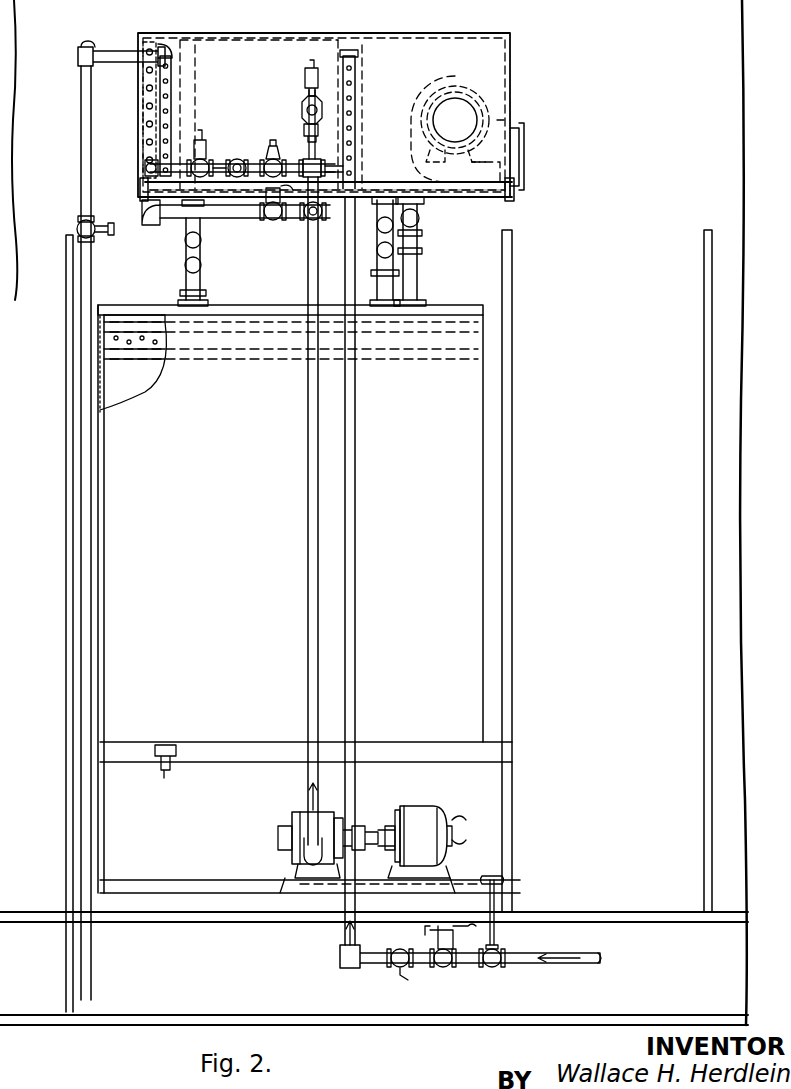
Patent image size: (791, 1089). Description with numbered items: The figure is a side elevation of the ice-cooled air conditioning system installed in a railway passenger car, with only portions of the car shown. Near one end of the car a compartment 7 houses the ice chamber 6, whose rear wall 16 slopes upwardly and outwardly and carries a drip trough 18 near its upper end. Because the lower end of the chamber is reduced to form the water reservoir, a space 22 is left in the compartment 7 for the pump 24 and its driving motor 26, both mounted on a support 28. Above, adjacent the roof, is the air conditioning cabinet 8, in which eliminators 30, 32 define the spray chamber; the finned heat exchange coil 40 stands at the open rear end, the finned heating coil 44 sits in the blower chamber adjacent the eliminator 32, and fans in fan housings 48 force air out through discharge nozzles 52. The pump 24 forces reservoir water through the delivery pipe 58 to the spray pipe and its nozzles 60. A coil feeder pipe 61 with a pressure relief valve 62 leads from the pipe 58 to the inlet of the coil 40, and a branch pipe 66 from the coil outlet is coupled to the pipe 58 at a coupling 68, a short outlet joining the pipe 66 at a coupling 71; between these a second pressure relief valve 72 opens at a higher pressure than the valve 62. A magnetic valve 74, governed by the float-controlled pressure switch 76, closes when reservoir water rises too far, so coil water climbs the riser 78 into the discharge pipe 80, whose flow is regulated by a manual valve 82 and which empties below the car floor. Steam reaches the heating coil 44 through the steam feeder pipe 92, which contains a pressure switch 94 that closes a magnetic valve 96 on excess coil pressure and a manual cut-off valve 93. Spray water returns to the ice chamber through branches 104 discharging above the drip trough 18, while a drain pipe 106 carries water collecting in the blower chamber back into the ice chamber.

The ice chamber 6 is at (484, 461).
The compartment 7 is at (496, 604).
The air conditioning cabinet 8 is at (496, 62).
The rear wall 16 is at (305, 599).
The drip trough 18 is at (145, 335).
The space 22 is at (470, 790).
The pump 24 is at (292, 820).
The driving motor 26 is at (410, 812).
The support 28 is at (310, 882).
The eliminator 30 is at (180, 46).
The eliminator 32 is at (330, 46).
The heat exchange coil 40 is at (143, 110).
The heating coil 44 is at (356, 94).
The fan housing 48 is at (480, 118).
The discharge nozzle 52 is at (520, 165).
The delivery pipe 58 is at (307, 610).
The nozzle 60 is at (304, 76).
The coil feeder pipe 61 is at (213, 218).
The pressure relief valve 62 is at (273, 221).
The branch pipe 66 is at (214, 164).
The coupling 68 is at (318, 165).
The coupling 71 is at (237, 160).
The pressure relief valve 72 is at (266, 150).
The magnetic valve 74 is at (200, 140).
The float-controlled pressure switch 76 is at (172, 755).
The riser 78 is at (170, 102).
The discharge pipe 80 is at (80, 148).
The valve 82 is at (78, 224).
The steam feeder pipe 92 is at (357, 553).
The cut-off valve 93 is at (500, 966).
The pressure switch 94 is at (395, 967).
The magnetic valve 96 is at (446, 968).
The branch 104 is at (198, 284).
The drain pipe 106 is at (412, 286).